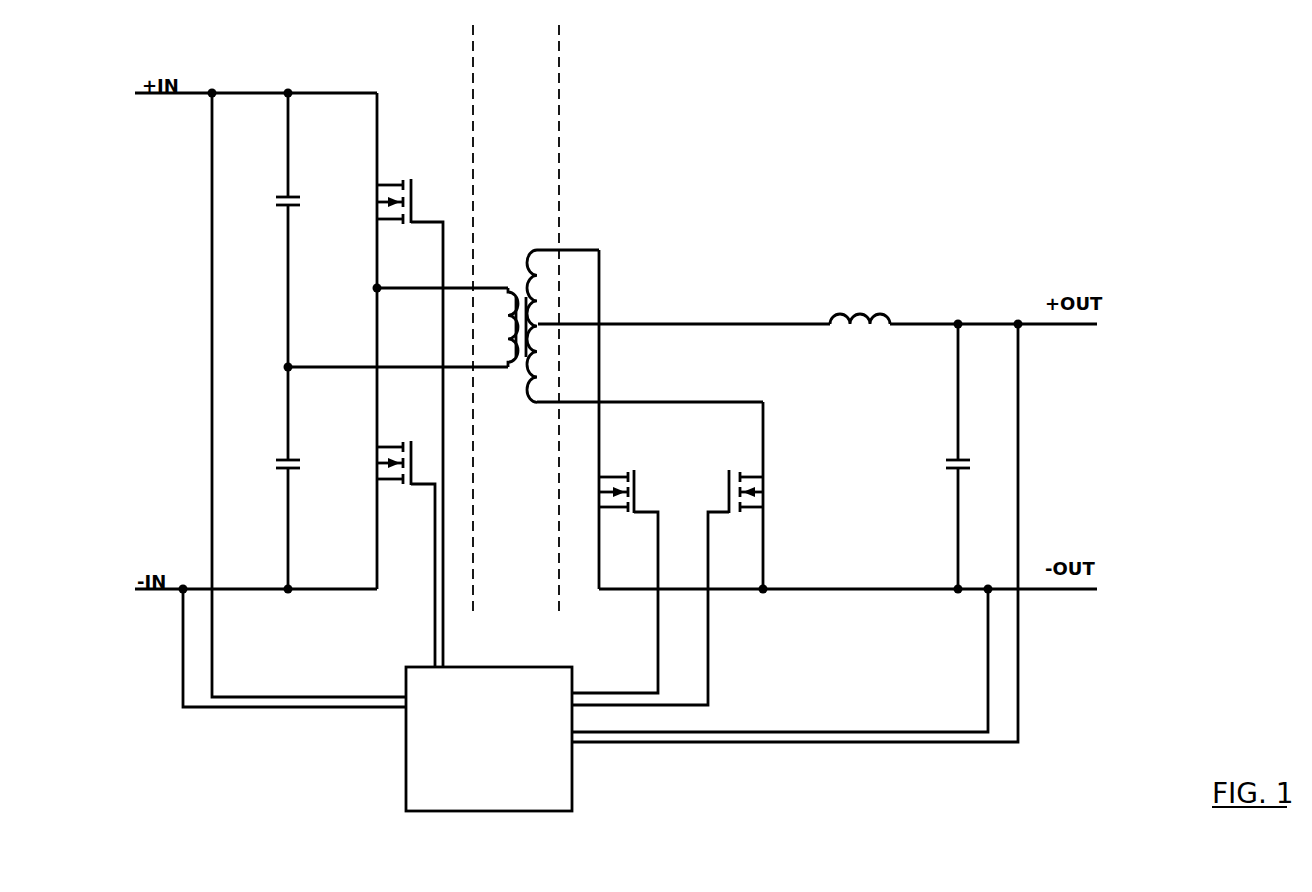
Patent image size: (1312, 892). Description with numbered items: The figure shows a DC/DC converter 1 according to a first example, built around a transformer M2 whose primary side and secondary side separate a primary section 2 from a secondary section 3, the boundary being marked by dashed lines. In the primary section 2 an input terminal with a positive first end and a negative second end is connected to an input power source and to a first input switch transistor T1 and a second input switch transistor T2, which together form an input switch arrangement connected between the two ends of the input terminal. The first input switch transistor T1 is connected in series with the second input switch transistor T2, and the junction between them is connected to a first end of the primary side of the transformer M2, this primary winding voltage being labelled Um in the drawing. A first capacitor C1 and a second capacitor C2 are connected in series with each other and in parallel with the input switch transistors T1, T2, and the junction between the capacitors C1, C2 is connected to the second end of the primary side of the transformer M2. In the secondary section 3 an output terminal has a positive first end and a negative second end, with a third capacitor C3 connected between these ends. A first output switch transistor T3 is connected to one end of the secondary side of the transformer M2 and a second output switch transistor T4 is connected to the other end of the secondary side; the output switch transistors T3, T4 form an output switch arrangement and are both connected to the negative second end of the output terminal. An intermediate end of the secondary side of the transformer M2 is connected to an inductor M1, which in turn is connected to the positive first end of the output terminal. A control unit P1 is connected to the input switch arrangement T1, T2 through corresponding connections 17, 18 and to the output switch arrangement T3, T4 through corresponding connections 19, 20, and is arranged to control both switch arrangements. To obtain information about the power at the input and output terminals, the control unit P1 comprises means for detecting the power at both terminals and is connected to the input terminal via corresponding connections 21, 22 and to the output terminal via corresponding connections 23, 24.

The DC/DC converter 1 is at (628, 122).
The primary section 2 is at (390, 72).
The secondary section 3 is at (730, 196).
The connection 17 is at (443, 433).
The connection 18 is at (432, 610).
The connection 19 is at (658, 643).
The connection 20 is at (708, 675).
The connection 21 is at (1018, 685).
The connection 22 is at (985, 660).
The connection 23 is at (213, 622).
The connection 24 is at (183, 640).
The first capacitor C1 is at (282, 194).
The second capacitor C2 is at (282, 457).
The third capacitor C3 is at (950, 457).
The first input switch transistor T1 is at (386, 191).
The second input switch transistor T2 is at (386, 453).
The first output switch transistor T3 is at (606, 482).
The second output switch transistor T4 is at (754, 483).
The inductor M1 is at (896, 300).
The transformer M2 is at (513, 276).
The transformer voltage Um is at (498, 276).
The control unit P1 is at (502, 730).